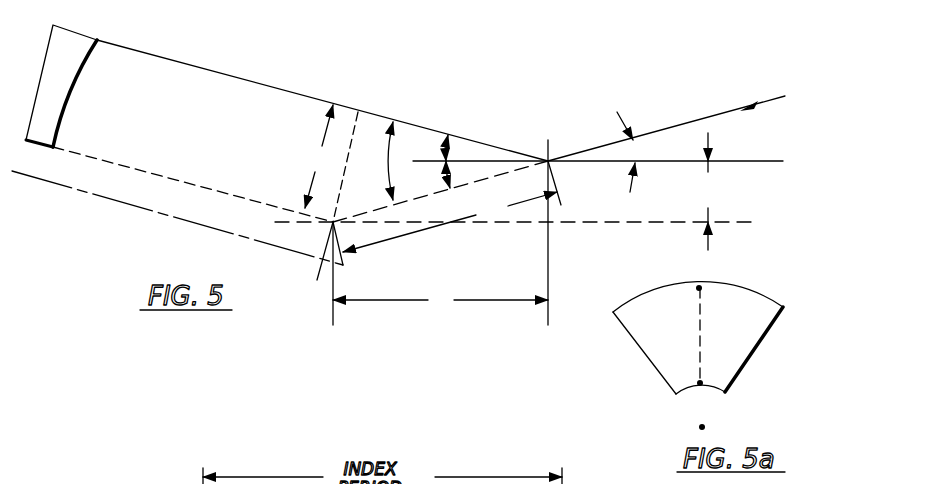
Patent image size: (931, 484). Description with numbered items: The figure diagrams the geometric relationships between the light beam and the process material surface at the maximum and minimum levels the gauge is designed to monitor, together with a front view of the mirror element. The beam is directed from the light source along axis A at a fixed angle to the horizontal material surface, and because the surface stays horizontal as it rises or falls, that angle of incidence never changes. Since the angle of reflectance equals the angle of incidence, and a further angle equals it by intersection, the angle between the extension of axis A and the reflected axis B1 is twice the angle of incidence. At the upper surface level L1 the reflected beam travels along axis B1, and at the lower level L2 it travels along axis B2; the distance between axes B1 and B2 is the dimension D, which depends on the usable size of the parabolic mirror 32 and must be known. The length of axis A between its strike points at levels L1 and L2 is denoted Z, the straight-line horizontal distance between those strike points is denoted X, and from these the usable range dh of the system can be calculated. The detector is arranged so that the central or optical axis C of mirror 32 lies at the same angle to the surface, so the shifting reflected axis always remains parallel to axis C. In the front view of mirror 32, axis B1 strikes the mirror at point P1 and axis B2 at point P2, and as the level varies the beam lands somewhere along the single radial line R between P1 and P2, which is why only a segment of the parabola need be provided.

In FIG. 5, the parabolic mirror 32 is at (73, 88).
In FIG. 5a, the parabolic mirror 32 is at (767, 311).
In FIG. 5, the point P1 is at (104, 38).
In FIG. 5a, the point P1 is at (703, 292).
In FIG. 5, the point P2 is at (58, 146).
In FIG. 5a, the point P2 is at (703, 386).
In FIG. 5, the axis B1 is at (227, 71).
In FIG. 5, the axis B2 is at (212, 184).
In FIG. 5, the central axis of the parabola C is at (118, 200).
In FIG. 5a, the central axis of the parabola C is at (700, 426).
In FIG. 5, the axis A is at (696, 121).
In FIG. 5, the upper surface level L1 is at (760, 162).
In FIG. 5, the lower surface level L2 is at (745, 221).
In FIG. 5a, the line R is at (693, 343).
In FIG. 5, the dimension D is at (319, 156).
In FIG. 5, the dimension X is at (440, 301).
In FIG. 5, the dimension Z is at (439, 220).
In FIG. 5, the usable range dh is at (702, 191).